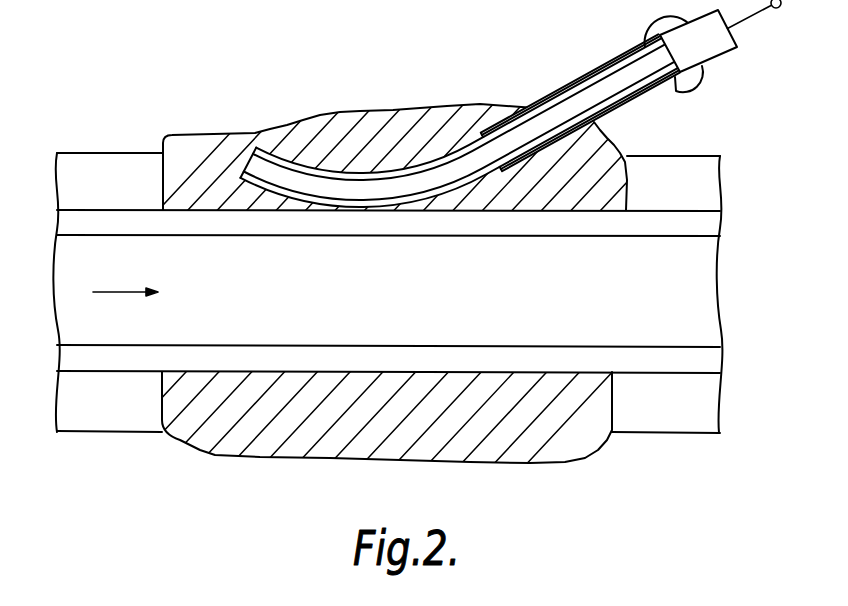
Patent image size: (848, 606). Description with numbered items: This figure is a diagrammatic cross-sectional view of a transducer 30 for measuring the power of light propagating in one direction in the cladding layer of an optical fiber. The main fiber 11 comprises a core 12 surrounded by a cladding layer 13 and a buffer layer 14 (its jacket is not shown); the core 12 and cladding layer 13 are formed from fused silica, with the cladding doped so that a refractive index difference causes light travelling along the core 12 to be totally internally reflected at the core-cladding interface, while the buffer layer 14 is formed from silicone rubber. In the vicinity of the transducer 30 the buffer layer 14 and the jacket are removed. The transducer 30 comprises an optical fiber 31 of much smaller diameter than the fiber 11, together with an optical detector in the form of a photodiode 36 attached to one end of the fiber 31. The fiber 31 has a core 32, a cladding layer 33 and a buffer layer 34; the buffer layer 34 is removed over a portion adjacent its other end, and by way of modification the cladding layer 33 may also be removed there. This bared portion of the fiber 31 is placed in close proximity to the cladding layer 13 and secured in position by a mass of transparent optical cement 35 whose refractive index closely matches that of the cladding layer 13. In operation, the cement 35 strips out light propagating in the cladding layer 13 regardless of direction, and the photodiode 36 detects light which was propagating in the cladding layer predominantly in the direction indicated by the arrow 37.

The optical fiber 11 is at (84, 458).
The core 12 is at (68, 275).
The cladding layer 13 is at (72, 362).
The buffer layer 14 is at (72, 408).
The transducer 30 is at (278, 88).
The optical fiber 31 is at (655, 102).
The core 32 is at (560, 123).
The cladding layer 33 is at (580, 90).
The buffer layer 34 is at (627, 58).
The optical cement 35 is at (444, 443).
The photodiode 36 is at (716, 44).
The arrow 37 is at (138, 291).